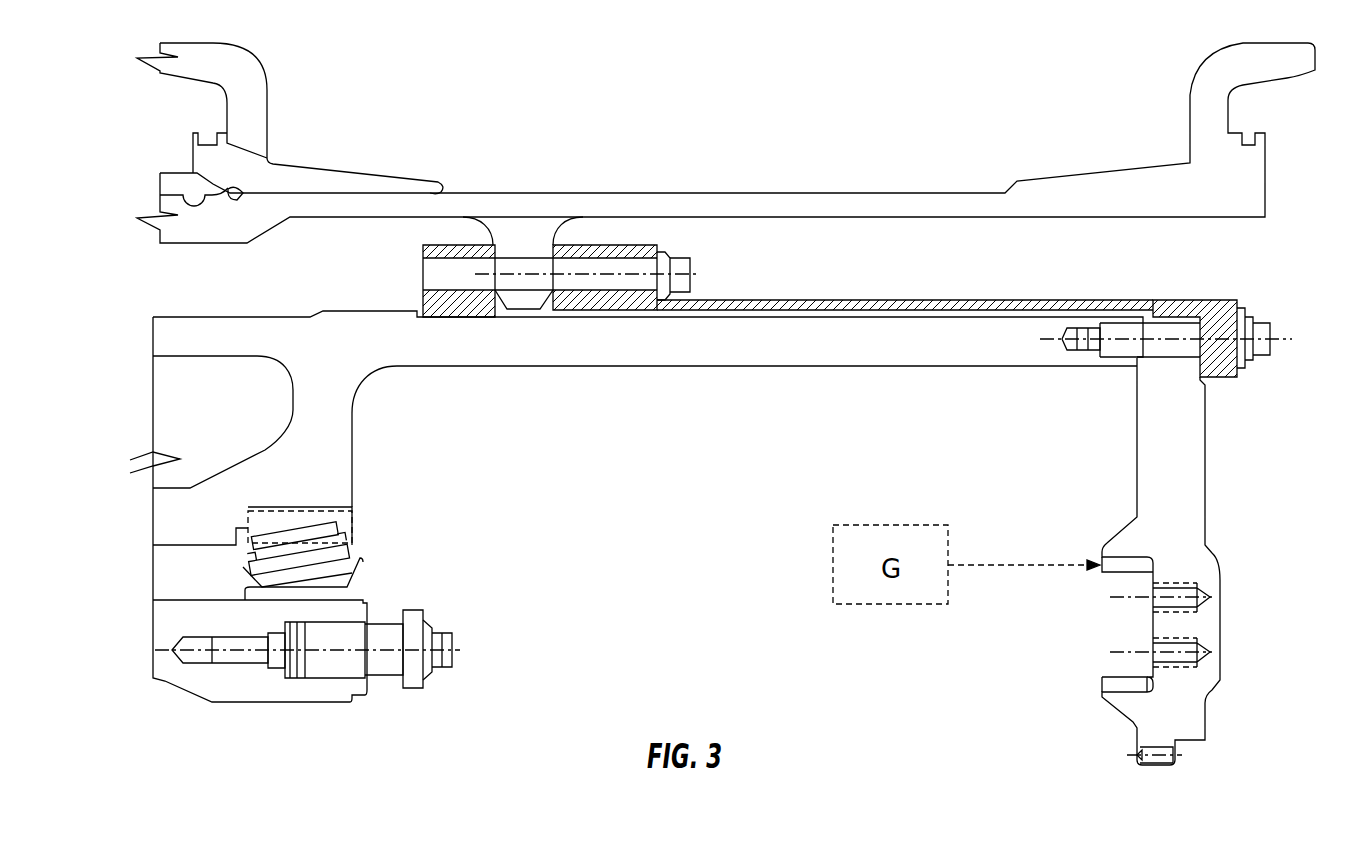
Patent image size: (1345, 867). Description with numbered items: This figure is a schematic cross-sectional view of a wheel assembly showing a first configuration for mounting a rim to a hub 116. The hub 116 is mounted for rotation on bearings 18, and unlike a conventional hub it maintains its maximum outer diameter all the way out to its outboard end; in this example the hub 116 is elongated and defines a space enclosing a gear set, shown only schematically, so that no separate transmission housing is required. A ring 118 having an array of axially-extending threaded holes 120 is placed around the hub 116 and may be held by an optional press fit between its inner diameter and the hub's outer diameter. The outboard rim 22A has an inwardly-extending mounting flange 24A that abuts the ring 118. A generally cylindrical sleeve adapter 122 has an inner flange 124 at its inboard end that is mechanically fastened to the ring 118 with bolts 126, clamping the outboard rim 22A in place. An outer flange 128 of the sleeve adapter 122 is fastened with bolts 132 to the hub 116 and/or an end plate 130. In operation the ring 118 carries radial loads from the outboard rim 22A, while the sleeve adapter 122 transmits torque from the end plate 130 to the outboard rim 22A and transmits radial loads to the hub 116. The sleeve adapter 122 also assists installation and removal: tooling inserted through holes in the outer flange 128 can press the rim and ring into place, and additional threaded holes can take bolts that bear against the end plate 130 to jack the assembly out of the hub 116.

The outboard rim 22A is at (1068, 177).
The mounting flange 24A is at (513, 237).
The ring 118 is at (438, 243).
The threaded holes 120 is at (443, 286).
The inner flange 124 is at (603, 252).
The bolts 126 is at (690, 263).
The sleeve adapter 122 is at (890, 300).
The outer flange 128 is at (1225, 302).
The bolts 132 is at (1247, 368).
The end plate 130 is at (1185, 510).
The hub 116 is at (320, 403).
The bearings 18 is at (322, 537).